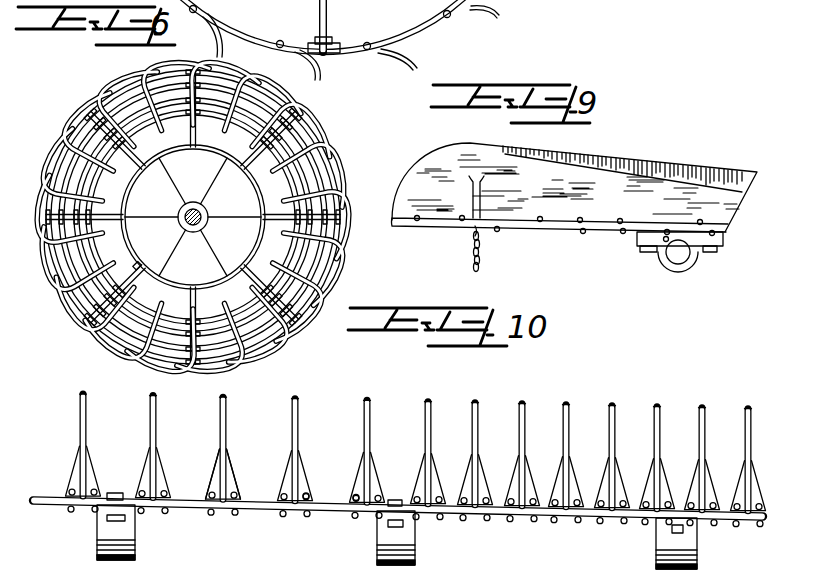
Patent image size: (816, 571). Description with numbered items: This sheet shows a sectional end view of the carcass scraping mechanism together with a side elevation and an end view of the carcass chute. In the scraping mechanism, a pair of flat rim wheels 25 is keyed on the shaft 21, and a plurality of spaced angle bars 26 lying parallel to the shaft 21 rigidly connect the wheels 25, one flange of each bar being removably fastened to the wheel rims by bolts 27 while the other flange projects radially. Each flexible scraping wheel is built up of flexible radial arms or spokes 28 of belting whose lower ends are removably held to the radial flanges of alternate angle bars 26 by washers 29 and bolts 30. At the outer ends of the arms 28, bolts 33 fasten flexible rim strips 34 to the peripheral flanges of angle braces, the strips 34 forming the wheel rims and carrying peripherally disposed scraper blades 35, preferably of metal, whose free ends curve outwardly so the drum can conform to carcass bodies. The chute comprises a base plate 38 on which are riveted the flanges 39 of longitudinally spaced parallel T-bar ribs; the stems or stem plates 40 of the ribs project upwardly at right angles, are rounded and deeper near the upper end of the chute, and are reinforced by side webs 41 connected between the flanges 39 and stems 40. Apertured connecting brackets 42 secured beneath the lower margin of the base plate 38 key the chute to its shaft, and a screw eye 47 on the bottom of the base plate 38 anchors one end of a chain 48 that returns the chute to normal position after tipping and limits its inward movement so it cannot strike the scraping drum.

In FIG. 6, the shaft 21 is at (212, 211).
In FIG. 6, the flat rim wheels 25 is at (193, 217).
In FIG. 6, the angle bars 26 is at (193, 217).
In FIG. 6, the bolts 27 is at (193, 217).
In FIG. 6, the flexible radial arms or spokes 28 is at (193, 217).
In FIG. 6, the washers 29 is at (128, 294).
In FIG. 6, the bolts 30 is at (123, 263).
In FIG. 6, the bolts 33 is at (171, 217).
In FIG. 6, the flexible rim strips 34 is at (193, 209).
In FIG. 6, the scraper blades 35 is at (193, 217).
In FIG. 9, the base plate 38 is at (523, 227).
In FIG. 10, the base plate 38 is at (293, 512).
In FIG. 9, the flanges 39 is at (598, 225).
In FIG. 10, the flanges 39 is at (355, 483).
In FIG. 9, the stems or stem plates 40 is at (678, 140).
In FIG. 10, the stems or stem plates 40 is at (367, 413).
In FIG. 9, the side webs 41 is at (472, 195).
In FIG. 10, the side webs 41 is at (287, 478).
In FIG. 9, the connecting brackets 42 is at (688, 260).
In FIG. 10, the connecting brackets 42 is at (403, 543).
In FIG. 9, the screw eye 47 is at (475, 233).
In FIG. 9, the chain 48 is at (480, 257).